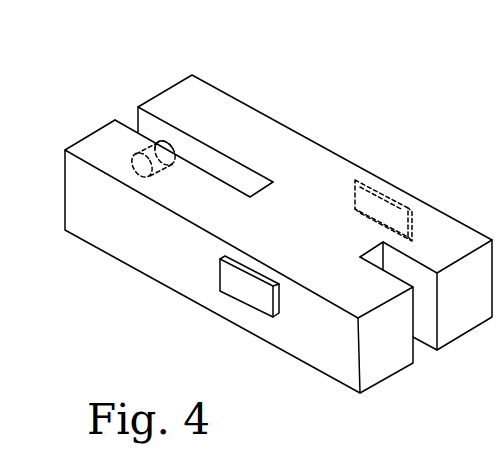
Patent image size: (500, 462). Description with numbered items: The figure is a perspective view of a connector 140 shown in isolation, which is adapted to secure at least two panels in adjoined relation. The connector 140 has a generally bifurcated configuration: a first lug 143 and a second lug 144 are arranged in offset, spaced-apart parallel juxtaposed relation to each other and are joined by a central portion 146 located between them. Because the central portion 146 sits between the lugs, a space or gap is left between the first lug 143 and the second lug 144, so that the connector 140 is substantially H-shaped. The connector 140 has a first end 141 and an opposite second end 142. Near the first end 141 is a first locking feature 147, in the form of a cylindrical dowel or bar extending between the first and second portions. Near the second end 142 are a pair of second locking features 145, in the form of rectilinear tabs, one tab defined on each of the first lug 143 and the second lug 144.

The connector 140 is at (331, 66).
The first end 141 is at (116, 71).
The second end 142 is at (418, 386).
The first lug 143 is at (82, 143).
The second lug 144 is at (190, 80).
The second locking feature 145 is at (230, 289).
The central portion 146 is at (293, 205).
The first locking feature 147 is at (167, 140).